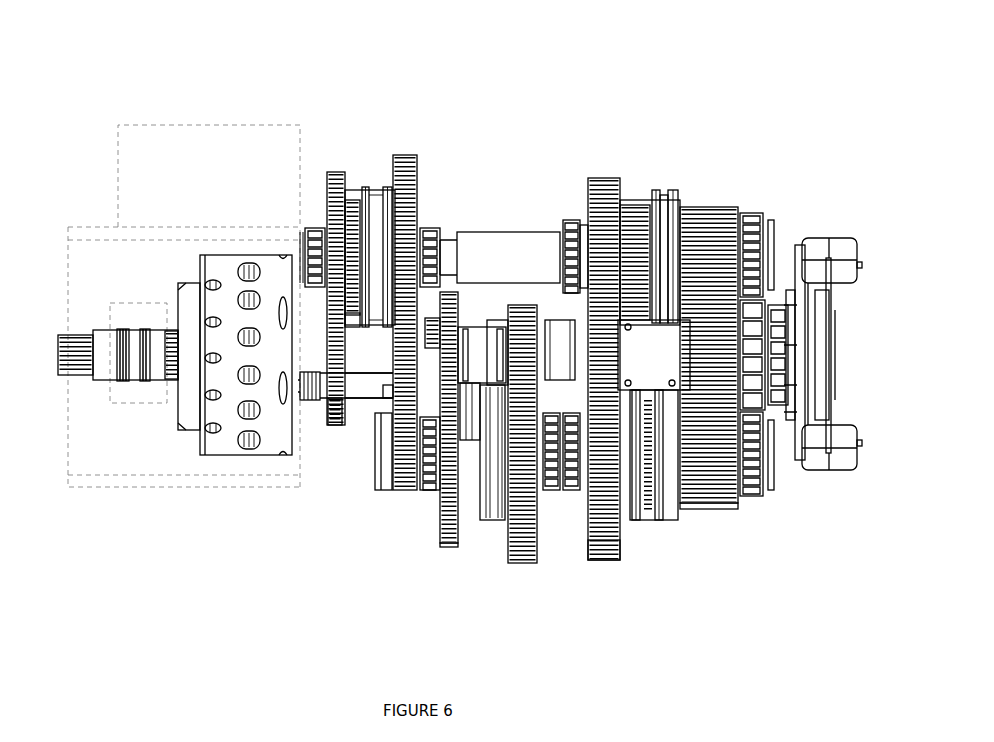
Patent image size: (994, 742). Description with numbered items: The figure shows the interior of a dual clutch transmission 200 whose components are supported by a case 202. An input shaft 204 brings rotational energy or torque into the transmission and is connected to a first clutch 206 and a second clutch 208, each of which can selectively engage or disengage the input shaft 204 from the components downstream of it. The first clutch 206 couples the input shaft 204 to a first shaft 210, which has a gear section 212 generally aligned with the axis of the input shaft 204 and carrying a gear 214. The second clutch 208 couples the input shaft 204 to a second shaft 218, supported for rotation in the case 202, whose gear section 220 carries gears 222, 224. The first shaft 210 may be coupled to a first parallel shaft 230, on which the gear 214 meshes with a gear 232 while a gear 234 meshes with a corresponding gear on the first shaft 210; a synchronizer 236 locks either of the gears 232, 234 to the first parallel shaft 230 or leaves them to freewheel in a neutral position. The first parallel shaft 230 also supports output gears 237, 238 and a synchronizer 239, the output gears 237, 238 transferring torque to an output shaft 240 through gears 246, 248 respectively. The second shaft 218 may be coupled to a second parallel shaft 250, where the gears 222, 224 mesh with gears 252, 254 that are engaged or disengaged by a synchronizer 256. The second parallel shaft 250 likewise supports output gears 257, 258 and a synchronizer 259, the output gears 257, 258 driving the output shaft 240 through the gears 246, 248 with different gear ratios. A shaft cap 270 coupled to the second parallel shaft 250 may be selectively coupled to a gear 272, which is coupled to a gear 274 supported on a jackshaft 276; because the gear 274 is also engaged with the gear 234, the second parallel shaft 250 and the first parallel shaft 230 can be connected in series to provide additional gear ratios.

The dual clutch transmission 200 is at (186, 58).
The case 202 is at (110, 470).
The input shaft 204 is at (60, 360).
The first clutch 206 is at (213, 427).
The second clutch 208 is at (250, 440).
The first shaft 210 is at (332, 325).
The gear section 212 is at (284, 255).
The gear 214 is at (360, 398).
The second shaft 218 is at (424, 327).
The gear section 220 is at (490, 327).
The gear 222 is at (457, 327).
The gear 224 is at (508, 305).
The first parallel shaft 230 is at (540, 228).
The gear 232 is at (330, 172).
The gear 234 is at (410, 157).
The synchronizer 236 is at (377, 197).
The output gear 237 is at (613, 177).
The output gear 238 is at (733, 207).
The synchronizer 239 is at (672, 190).
The output shaft 240 is at (670, 340).
The gear 246 is at (622, 338).
The gear 248 is at (737, 387).
The second parallel shaft 250 is at (567, 480).
The gear 252 is at (442, 540).
The gear 254 is at (553, 490).
The synchronizer 256 is at (493, 513).
The output gear 257 is at (615, 507).
The output gear 258 is at (737, 498).
The synchronizer 259 is at (653, 513).
The shaft cap 270 is at (378, 490).
The gear 272 is at (403, 487).
The gear 274 is at (393, 403).
The jackshaft 276 is at (390, 400).